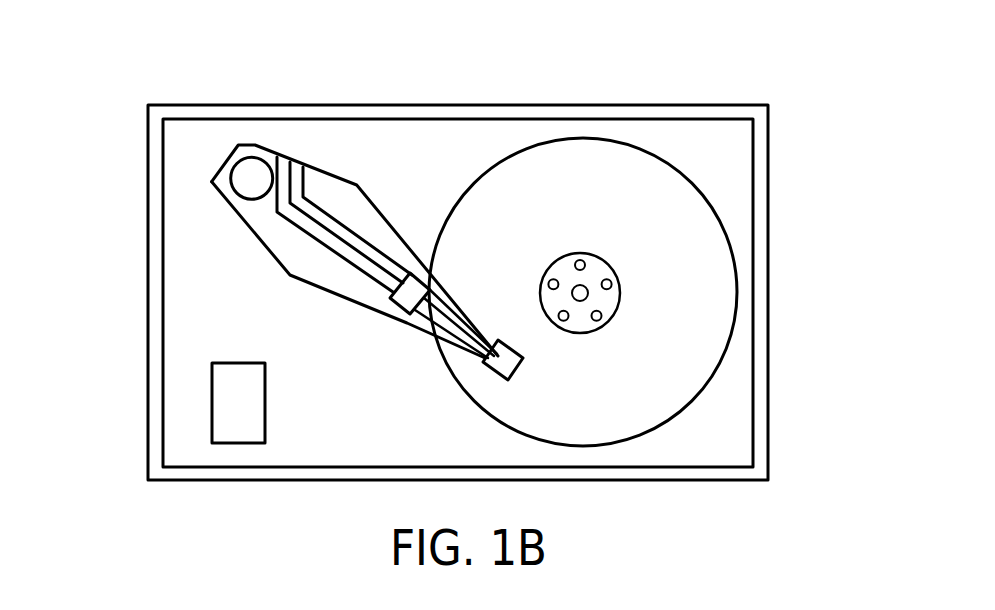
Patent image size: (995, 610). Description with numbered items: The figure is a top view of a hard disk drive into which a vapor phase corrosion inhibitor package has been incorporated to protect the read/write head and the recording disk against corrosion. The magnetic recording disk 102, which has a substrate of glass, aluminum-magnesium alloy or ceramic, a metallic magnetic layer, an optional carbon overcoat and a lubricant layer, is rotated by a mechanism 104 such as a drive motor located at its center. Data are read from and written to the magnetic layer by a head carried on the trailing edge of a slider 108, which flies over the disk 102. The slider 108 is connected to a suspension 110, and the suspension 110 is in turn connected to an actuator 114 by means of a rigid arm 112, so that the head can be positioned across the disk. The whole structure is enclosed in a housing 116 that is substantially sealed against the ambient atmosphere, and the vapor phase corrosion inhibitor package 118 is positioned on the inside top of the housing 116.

The magnetic recording disk 102 is at (650, 183).
The mechanism 104 is at (600, 273).
The slider 108 is at (523, 363).
The suspension 110 is at (420, 313).
The rigid arm 112 is at (267, 222).
The actuator 114 is at (247, 183).
The housing 116 is at (768, 172).
The vapor phase corrosion inhibitor (VPCI) package 118 is at (230, 408).